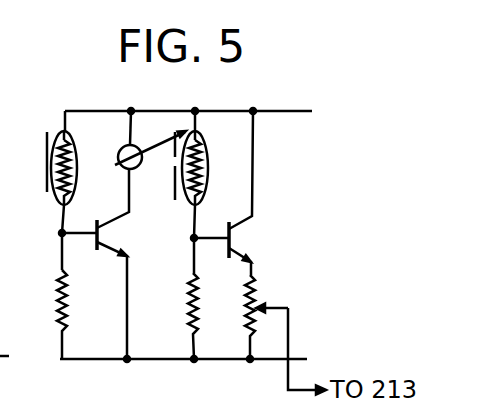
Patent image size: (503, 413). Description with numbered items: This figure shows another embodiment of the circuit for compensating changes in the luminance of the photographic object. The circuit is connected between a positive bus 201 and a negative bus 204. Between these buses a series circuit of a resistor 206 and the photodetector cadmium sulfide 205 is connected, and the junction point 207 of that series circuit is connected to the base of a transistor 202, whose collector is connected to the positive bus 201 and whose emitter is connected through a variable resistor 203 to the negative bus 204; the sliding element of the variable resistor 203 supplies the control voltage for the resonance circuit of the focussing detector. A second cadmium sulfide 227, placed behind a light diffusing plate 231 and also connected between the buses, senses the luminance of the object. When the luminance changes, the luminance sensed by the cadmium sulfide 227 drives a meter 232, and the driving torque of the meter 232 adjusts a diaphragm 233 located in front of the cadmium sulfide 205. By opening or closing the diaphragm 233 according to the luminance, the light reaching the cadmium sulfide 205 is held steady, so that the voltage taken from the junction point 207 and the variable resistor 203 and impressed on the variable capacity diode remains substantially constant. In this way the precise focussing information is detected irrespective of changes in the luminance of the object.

The positive bus 201 is at (280, 110).
The transistor 202 is at (237, 238).
The variable resistor 203 is at (253, 292).
The negative bus 204 is at (228, 361).
The cadmium sulfide 205 is at (209, 161).
The resistor 206 is at (191, 297).
The junction point 207 is at (193, 239).
The cadmium sulfide 227 is at (75, 126).
The light diffusing plate 231 is at (47, 143).
The meter 232 is at (118, 166).
The diaphragm 233 is at (172, 188).